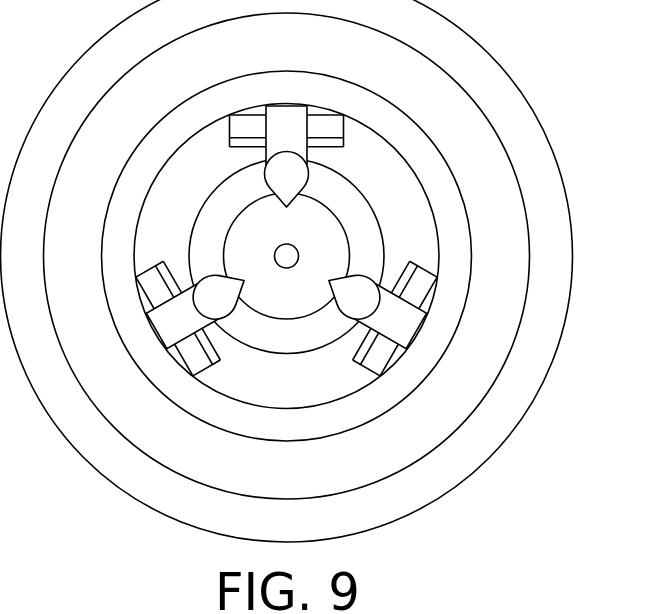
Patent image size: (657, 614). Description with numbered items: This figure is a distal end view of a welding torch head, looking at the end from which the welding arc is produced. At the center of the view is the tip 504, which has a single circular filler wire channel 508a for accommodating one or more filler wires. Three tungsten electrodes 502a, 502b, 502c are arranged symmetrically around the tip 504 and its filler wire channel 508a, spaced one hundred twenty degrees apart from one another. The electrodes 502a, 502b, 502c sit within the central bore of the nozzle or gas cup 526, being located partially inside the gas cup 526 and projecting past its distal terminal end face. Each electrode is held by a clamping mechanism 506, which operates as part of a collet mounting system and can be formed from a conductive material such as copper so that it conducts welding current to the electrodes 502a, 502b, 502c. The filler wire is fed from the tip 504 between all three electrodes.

The tungsten electrode 502a is at (291, 163).
The tungsten electrode 502b is at (186, 319).
The tungsten electrode 502c is at (364, 307).
The tip 504 is at (328, 227).
The clamping mechanism 506 is at (179, 282).
The filler wire channel 508a is at (286, 264).
The gas cup 526 is at (515, 223).